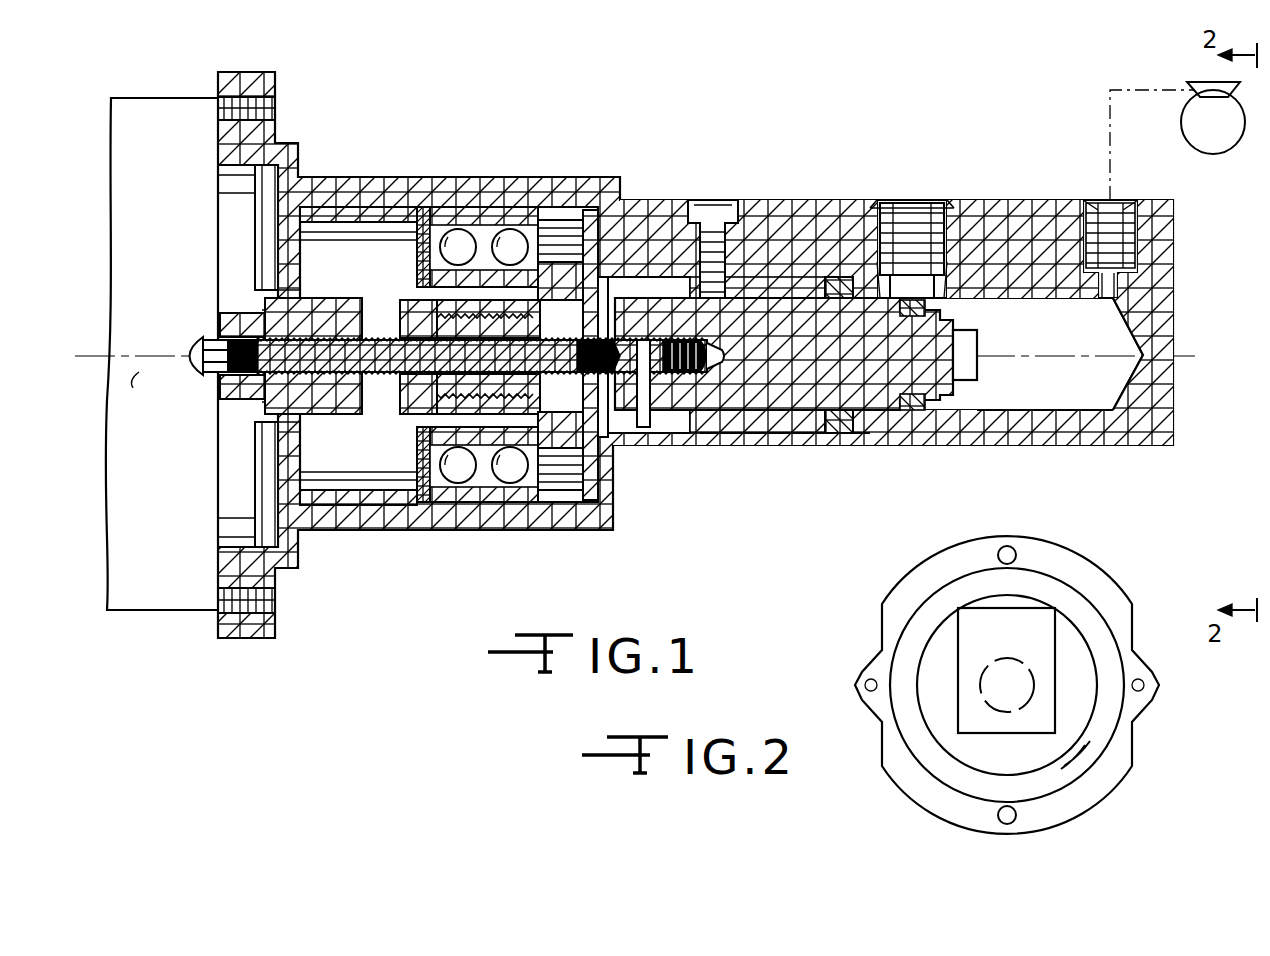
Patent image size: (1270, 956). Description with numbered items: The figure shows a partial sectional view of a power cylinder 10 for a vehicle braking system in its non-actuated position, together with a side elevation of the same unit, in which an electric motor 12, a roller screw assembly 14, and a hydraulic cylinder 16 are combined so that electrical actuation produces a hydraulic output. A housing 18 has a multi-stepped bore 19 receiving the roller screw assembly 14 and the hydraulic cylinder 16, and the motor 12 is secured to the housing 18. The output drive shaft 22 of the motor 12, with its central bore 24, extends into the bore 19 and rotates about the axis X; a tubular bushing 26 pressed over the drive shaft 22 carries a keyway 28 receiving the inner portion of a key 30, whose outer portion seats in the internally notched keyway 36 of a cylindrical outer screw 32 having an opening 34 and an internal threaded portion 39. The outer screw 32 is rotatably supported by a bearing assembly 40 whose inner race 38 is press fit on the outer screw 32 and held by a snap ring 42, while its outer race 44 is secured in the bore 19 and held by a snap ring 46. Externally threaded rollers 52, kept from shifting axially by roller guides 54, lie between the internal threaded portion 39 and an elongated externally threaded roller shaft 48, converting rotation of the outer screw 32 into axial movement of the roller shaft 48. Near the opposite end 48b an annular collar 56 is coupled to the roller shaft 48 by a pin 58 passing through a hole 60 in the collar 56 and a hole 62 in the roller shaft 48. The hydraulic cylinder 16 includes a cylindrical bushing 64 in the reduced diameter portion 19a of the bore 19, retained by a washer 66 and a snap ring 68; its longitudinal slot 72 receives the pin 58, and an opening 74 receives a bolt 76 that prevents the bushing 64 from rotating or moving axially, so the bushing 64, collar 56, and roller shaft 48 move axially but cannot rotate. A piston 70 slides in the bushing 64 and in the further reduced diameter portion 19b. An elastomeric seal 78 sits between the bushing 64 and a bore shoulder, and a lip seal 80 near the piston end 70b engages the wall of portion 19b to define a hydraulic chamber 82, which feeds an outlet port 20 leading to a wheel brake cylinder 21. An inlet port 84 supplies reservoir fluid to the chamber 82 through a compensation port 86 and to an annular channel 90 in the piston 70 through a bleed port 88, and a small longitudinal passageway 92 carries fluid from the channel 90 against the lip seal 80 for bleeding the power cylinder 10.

In FIG. 1, the power cylinder 10 is at (535, 140).
In FIG. 2, the power cylinder 10 is at (855, 625).
In FIG. 1, the electric motor 12 is at (148, 95).
In FIG. 1, the roller screw assembly 14 is at (425, 152).
In FIG. 1, the hydraulic cylinder 16 is at (918, 152).
In FIG. 1, the housing 18 is at (267, 572).
In FIG. 2, the housing 18 is at (1085, 580).
In FIG. 1, the multi-stepped bore 19 is at (328, 212).
In FIG. 2, the multi-stepped bore 19 is at (1005, 702).
In FIG. 1, the reduced diameter portion 19a is at (760, 432).
In FIG. 1, the further reduced diameter portion 19b is at (1072, 407).
In FIG. 1, the outlet port 20 is at (1120, 210).
In FIG. 1, the wheel brake cylinder 21 is at (1195, 84).
In FIG. 1, the output drive shaft 22 is at (230, 335).
In FIG. 1, the central bore 24 is at (198, 378).
In FIG. 1, the tubular bushing 26 is at (262, 420).
In FIG. 1, the keyway 28 is at (297, 300).
In FIG. 1, the key 30 is at (315, 293).
In FIG. 1, the outer screw 32 is at (398, 455).
In FIG. 1, the opening 34 is at (373, 410).
In FIG. 1, the internally notched keyway 36 is at (355, 291).
In FIG. 1, the inner race 38 is at (556, 440).
In FIG. 1, the internal threaded portion 39 is at (590, 445).
In FIG. 1, the bearing assembly 40 is at (480, 195).
In FIG. 1, the snap ring 42 is at (405, 425).
In FIG. 1, the outer race 44 is at (522, 432).
In FIG. 1, the snap ring 46 is at (423, 507).
In FIG. 1, the roller shaft 48 is at (565, 275).
In FIG. 1, the opposite end of roller shaft 48b is at (730, 352).
In FIG. 1, the externally threaded rollers 52 is at (480, 383).
In FIG. 1, the roller guides 54 is at (550, 290).
In FIG. 1, the annular collar 56 is at (642, 298).
In FIG. 1, the pin 58 is at (650, 432).
In FIG. 1, the hole 60 is at (600, 443).
In FIG. 1, the hole 62 is at (670, 377).
In FIG. 1, the cylindrical bushing 64 is at (765, 288).
In FIG. 1, the washer 66 is at (602, 440).
In FIG. 1, the snap ring 68 is at (598, 288).
In FIG. 1, the piston 70 is at (880, 405).
In FIG. 1, the end of piston 70b is at (978, 370).
In FIG. 1, the longitudinally extending slot 72 is at (720, 428).
In FIG. 1, the opening 74 is at (750, 295).
In FIG. 1, the bolt 76 is at (712, 212).
In FIG. 1, the elastomeric seal 78 is at (840, 433).
In FIG. 1, the lip seal 80 is at (955, 420).
In FIG. 1, the hydraulic chamber 82 is at (1099, 354).
In FIG. 1, the inlet port 84 is at (925, 218).
In FIG. 1, the compensation port 86 is at (975, 208).
In FIG. 1, the bleed port 88 is at (878, 265).
In FIG. 1, the annular channel 90 is at (918, 409).
In FIG. 1, the longitudinal passageway 92 is at (942, 323).